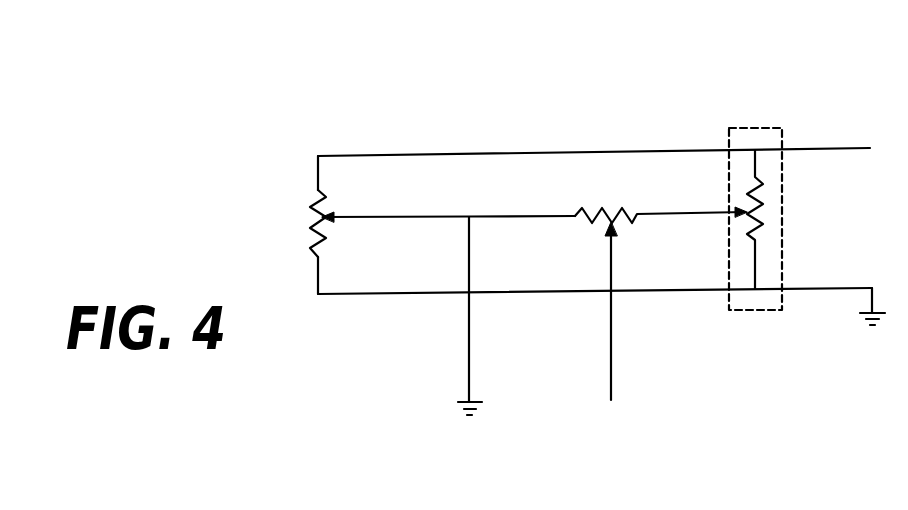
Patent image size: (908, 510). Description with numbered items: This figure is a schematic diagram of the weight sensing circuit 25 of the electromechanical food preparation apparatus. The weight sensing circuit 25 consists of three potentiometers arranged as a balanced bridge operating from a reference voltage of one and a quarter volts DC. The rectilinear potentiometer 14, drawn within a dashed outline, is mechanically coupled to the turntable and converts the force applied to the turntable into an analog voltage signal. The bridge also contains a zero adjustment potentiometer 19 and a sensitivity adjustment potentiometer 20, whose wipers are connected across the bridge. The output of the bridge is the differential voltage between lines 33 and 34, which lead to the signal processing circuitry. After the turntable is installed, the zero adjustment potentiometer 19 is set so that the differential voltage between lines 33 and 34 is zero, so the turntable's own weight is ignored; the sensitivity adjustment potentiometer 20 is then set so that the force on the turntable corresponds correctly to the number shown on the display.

The rectilinear potentiometer 14 is at (770, 128).
The zero adjustment potentiometer 19 is at (320, 217).
The sensitivity adjustment potentiometer 20 is at (627, 210).
The weight sensing circuit 25 is at (596, 123).
The line 33 is at (468, 353).
The line 34 is at (613, 350).